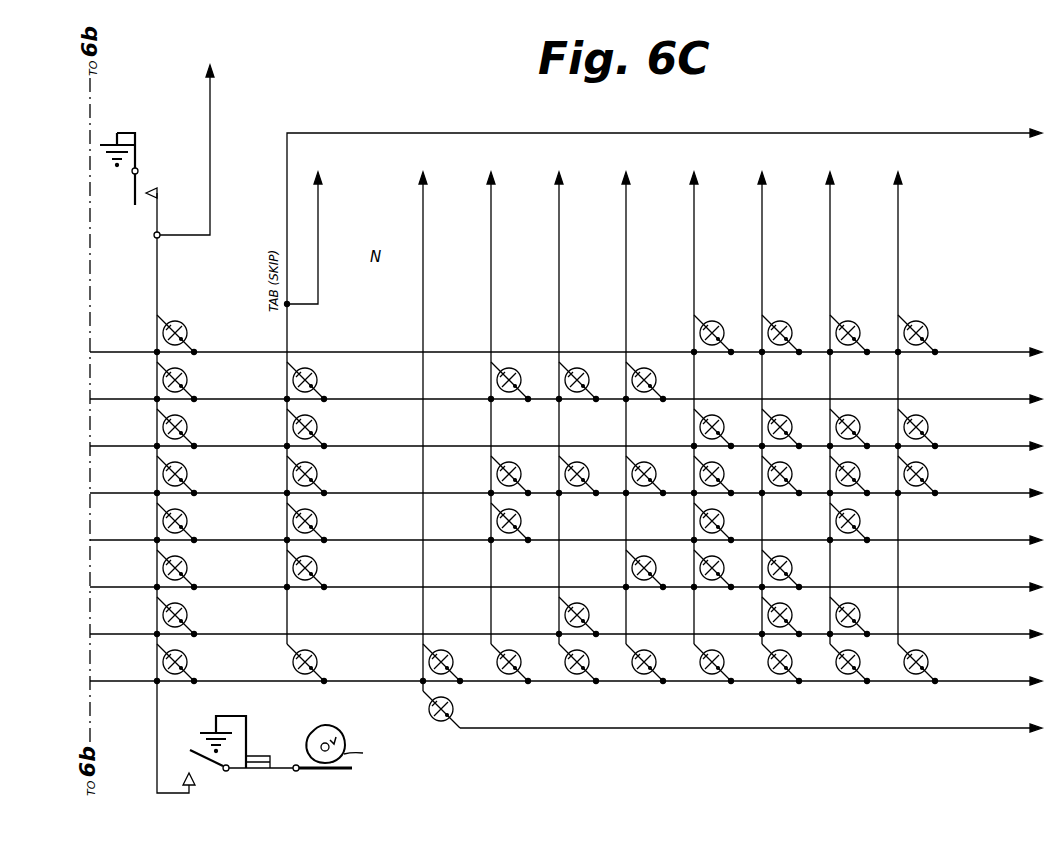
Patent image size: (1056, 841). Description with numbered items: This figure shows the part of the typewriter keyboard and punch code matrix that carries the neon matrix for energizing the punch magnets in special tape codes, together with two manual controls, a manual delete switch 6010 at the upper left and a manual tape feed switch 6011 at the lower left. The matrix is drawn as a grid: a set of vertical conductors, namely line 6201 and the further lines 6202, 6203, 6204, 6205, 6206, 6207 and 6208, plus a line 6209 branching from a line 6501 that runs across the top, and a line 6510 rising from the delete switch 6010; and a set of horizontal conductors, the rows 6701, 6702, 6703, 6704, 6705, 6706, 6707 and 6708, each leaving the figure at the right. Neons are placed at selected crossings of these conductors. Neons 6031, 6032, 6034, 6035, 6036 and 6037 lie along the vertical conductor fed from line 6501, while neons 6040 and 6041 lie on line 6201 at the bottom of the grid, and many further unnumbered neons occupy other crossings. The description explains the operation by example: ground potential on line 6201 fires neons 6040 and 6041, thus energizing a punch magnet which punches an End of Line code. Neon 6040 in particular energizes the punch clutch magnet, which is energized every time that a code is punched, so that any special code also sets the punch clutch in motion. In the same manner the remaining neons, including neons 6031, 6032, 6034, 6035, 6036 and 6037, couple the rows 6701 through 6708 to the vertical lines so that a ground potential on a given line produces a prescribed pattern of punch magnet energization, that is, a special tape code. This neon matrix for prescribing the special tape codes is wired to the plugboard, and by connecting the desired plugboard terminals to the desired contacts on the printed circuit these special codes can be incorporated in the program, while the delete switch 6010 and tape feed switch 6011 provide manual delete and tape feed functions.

The manual delete switch 6010 is at (135, 185).
The manual tape feed switch 6011 is at (200, 752).
The diode 6031 is at (317, 380).
The diode 6032 is at (317, 427).
The diode 6034 is at (317, 474).
The diode 6035 is at (317, 521).
The diode 6036 is at (317, 568).
The diode 6037 is at (292, 665).
The neon 6040 is at (427, 662).
The neon 6041 is at (432, 716).
The line 6201 is at (423, 212).
The output line 6202 is at (491, 212).
The output line 6203 is at (559, 218).
The output line 6204 is at (626, 212).
The output line 6205 is at (694, 212).
The output line 6206 is at (762, 212).
The output line 6207 is at (830, 212).
The output line 6208 is at (898, 212).
The tab skip output line 6209 is at (318, 296).
The line 6501 is at (505, 133).
The line 6510 is at (210, 100).
The input line 6701 is at (996, 349).
The input line 6702 is at (996, 396).
The input line 6703 is at (998, 443).
The input line 6704 is at (1003, 490).
The input line 6705 is at (1003, 537).
The input line 6706 is at (1005, 584).
The input line 6707 is at (1005, 631).
The input line 6708 is at (1006, 678).